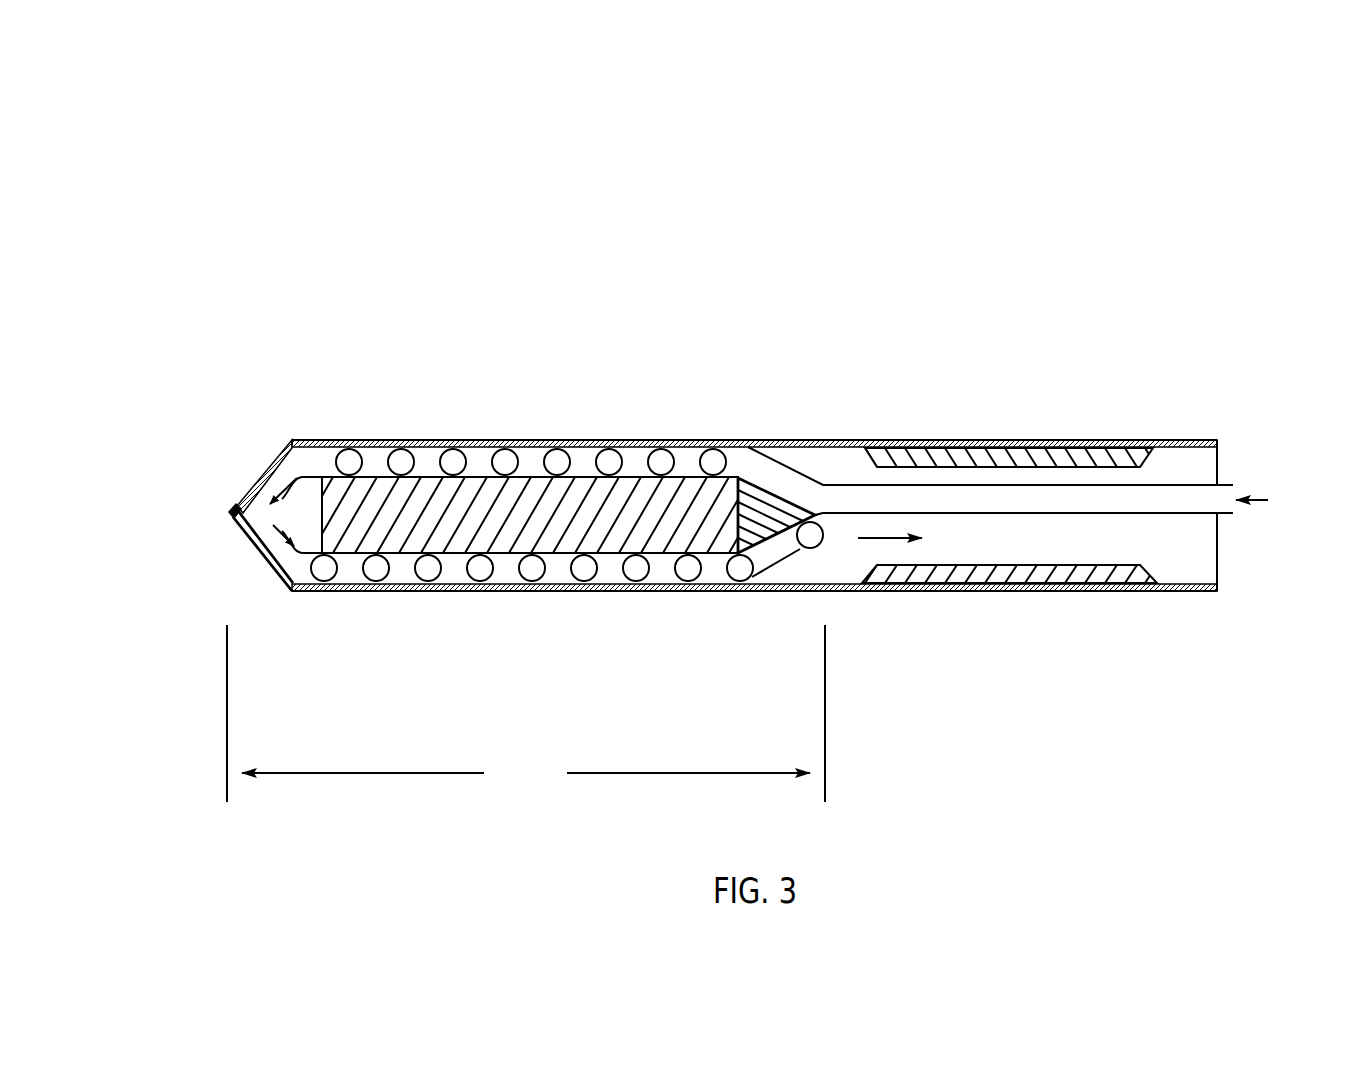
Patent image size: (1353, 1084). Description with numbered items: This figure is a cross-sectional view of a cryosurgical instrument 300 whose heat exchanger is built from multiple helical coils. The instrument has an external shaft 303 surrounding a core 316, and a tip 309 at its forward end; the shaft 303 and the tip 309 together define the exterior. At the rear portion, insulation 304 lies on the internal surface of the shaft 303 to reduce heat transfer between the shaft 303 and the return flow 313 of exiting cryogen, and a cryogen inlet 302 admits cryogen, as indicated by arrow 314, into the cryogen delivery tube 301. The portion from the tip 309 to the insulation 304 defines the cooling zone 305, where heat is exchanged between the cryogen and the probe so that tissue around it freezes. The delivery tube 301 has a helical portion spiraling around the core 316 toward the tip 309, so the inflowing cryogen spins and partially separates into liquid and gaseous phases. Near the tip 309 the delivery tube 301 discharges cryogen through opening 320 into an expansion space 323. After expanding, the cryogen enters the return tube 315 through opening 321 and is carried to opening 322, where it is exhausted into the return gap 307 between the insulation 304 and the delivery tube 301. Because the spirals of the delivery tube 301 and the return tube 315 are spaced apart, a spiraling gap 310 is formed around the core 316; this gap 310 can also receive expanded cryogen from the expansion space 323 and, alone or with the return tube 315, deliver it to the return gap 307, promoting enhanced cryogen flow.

The cryosurgical instrument 300 is at (486, 198).
The cryogen delivery tube 301 is at (720, 465).
The cryogen inlet 302 is at (1197, 497).
The shaft 303 is at (1067, 448).
The insulation 304 is at (975, 452).
The cooling zone 305 is at (526, 713).
The return gap 307 is at (1097, 538).
The tip 309 is at (235, 527).
The gap 310 is at (560, 568).
The return flow 313 is at (895, 538).
The arrow 314 is at (1281, 498).
The return tube 315 is at (739, 570).
The core 316 is at (627, 495).
The opening 320 is at (303, 468).
The opening 321 is at (303, 560).
The opening 322 is at (812, 548).
The expansion space 323 is at (230, 510).